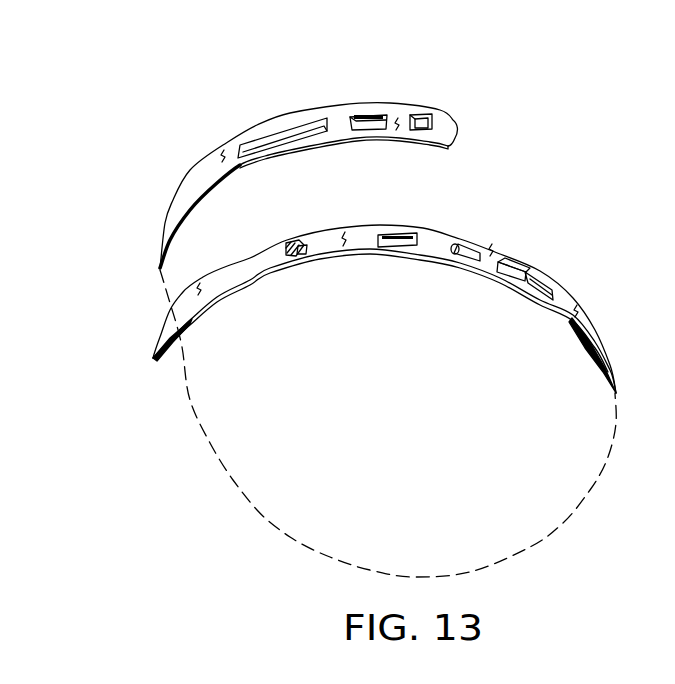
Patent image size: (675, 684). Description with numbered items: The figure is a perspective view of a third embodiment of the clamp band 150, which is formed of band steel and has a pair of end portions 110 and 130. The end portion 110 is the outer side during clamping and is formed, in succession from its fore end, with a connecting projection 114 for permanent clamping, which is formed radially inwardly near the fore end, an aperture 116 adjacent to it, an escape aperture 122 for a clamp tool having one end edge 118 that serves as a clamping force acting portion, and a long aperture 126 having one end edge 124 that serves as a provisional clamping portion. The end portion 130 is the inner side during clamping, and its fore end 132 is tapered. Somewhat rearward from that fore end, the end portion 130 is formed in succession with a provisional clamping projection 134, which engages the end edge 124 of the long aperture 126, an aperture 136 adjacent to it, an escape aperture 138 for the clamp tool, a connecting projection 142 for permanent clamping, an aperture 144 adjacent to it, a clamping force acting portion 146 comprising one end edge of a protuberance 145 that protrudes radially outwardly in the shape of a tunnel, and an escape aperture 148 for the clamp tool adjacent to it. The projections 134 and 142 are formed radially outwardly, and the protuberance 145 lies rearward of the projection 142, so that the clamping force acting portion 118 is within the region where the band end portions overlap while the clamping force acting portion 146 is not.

The end portion 110 is at (325, 101).
The connecting projection 114 is at (434, 125).
The aperture 116 is at (429, 116).
The end edge 118 is at (381, 116).
The escape aperture 122 is at (363, 115).
The end edge 124 is at (322, 134).
The long aperture 126 is at (292, 136).
The end portion 130 is at (424, 222).
The fore end 132 is at (183, 316).
The provisional clamping projection 134 is at (287, 243).
The aperture 136 is at (302, 258).
The escape aperture 138 is at (401, 250).
The connecting projection 142 is at (455, 246).
The aperture 144 is at (470, 261).
The protuberance 145 is at (515, 266).
The clamping force acting portion 146 is at (532, 274).
The escape aperture 148 is at (555, 286).
The clamp band 150 is at (186, 165).